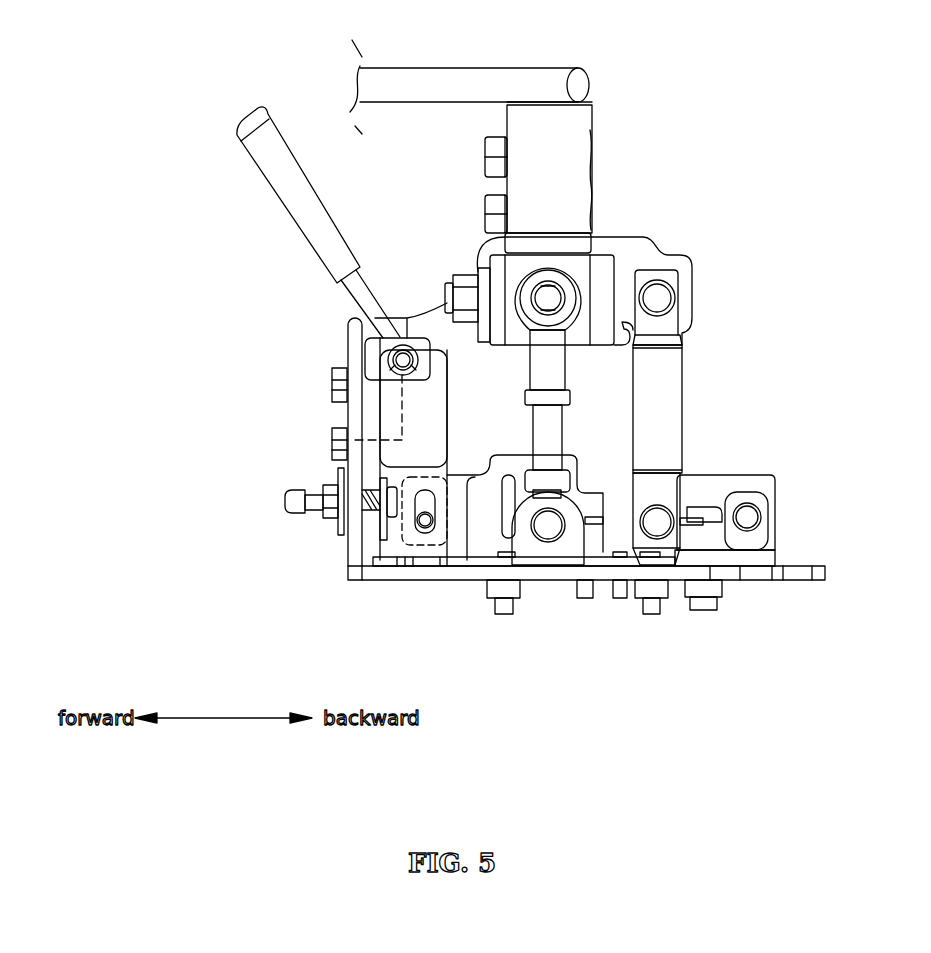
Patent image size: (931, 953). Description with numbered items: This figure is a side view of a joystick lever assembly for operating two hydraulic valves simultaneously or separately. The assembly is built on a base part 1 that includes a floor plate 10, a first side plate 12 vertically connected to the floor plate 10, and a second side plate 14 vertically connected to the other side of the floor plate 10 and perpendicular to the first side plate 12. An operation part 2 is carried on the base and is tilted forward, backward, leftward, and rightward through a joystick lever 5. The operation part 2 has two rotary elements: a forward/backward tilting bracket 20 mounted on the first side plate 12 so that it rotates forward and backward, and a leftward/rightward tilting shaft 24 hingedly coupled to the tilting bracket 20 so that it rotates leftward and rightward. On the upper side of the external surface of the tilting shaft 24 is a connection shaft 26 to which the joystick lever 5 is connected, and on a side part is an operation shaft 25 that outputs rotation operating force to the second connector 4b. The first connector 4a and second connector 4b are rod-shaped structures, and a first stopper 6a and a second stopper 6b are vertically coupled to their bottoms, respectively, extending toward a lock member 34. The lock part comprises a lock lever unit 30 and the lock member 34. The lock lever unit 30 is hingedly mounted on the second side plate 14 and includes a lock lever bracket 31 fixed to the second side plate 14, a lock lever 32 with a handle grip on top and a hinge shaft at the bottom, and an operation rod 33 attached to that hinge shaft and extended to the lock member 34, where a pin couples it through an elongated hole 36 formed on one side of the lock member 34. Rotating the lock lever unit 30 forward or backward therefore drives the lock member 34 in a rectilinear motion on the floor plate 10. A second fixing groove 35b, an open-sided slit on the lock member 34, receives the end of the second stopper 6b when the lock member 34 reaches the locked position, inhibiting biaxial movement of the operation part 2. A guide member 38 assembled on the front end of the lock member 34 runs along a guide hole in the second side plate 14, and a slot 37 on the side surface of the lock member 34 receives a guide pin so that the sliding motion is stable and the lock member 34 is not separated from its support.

The base part 1 is at (551, 505).
The operation part 2 is at (573, 222).
The joystick lever 5 is at (516, 84).
The floor plate 10 is at (372, 573).
The first side plate 12 is at (458, 457).
The second side plate 14 is at (355, 545).
The forward/backward tilting bracket 20 is at (693, 262).
The leftward/rightward tilting shaft 24 is at (582, 262).
The operation shaft 25 is at (553, 298).
The connection shaft 26 is at (563, 245).
The lock lever unit 30 is at (282, 333).
The lock lever bracket 31 is at (387, 397).
The lock lever 32 is at (302, 287).
The operation rod 33 is at (350, 440).
The lock member 34 is at (760, 483).
The second fixing groove 35b is at (273, 186).
The elongated hole 36 is at (423, 502).
The slot 37 is at (703, 512).
The guide member 38 is at (302, 502).
The first connector 4a is at (668, 370).
The second connector 4b is at (548, 442).
The first stopper 6a is at (657, 525).
The second stopper 6b is at (548, 528).